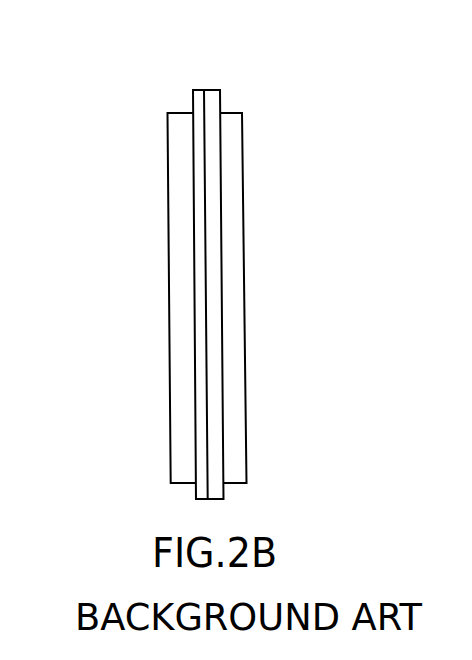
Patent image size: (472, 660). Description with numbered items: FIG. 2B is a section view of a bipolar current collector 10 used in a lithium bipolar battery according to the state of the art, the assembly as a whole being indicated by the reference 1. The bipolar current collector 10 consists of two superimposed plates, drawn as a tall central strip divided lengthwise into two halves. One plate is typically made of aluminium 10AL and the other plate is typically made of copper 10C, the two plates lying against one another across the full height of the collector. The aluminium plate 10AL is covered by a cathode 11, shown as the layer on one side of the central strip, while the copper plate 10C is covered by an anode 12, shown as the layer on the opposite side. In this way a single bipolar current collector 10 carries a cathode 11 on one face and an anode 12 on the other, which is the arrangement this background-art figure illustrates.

The secondary battery 1 is at (39, 53).
The bipolar current collector 10 is at (212, 272).
The copper plate 10C is at (202, 273).
The aluminium plate 10AL is at (210, 187).
The cathode 11 is at (237, 344).
The anode 12 is at (180, 370).